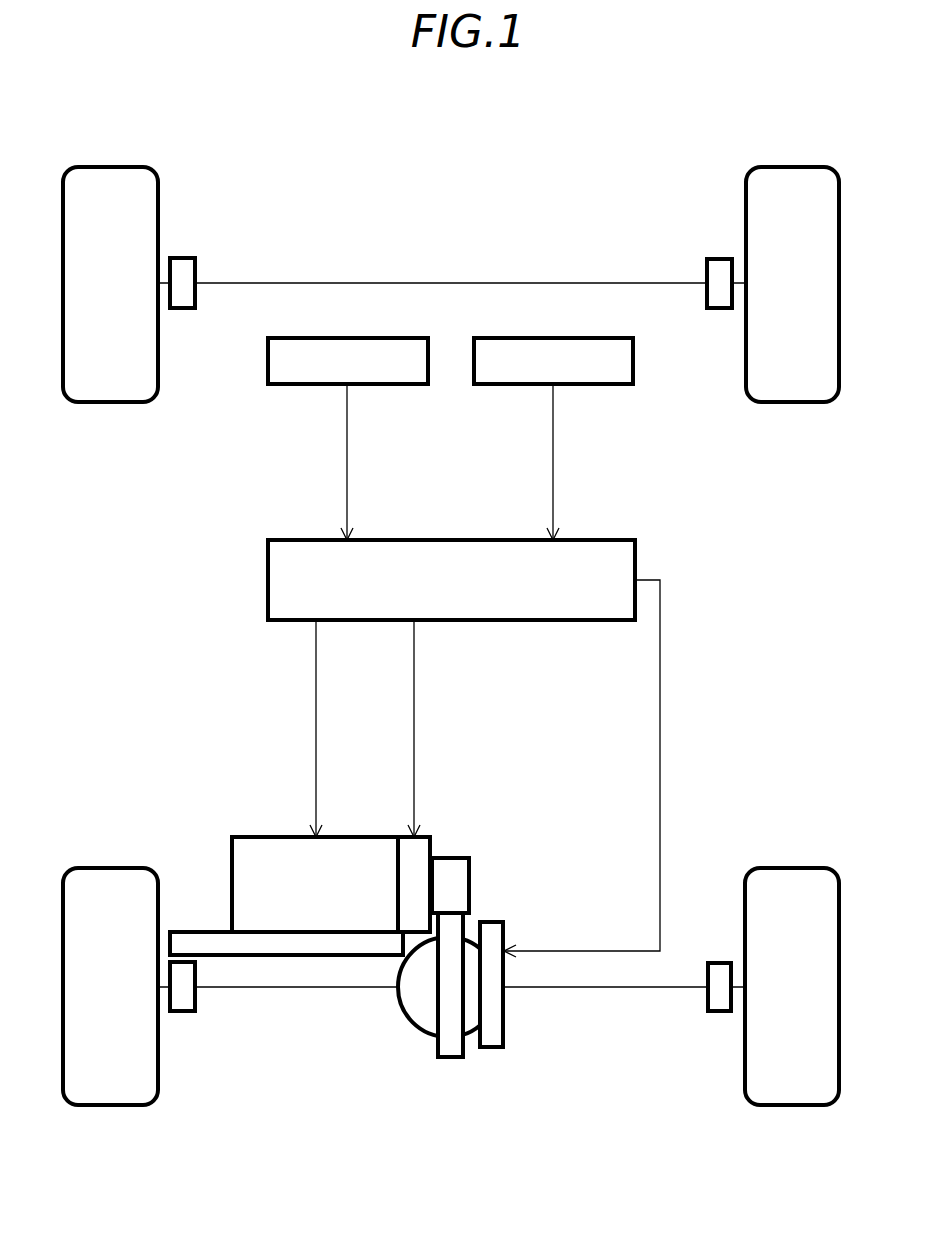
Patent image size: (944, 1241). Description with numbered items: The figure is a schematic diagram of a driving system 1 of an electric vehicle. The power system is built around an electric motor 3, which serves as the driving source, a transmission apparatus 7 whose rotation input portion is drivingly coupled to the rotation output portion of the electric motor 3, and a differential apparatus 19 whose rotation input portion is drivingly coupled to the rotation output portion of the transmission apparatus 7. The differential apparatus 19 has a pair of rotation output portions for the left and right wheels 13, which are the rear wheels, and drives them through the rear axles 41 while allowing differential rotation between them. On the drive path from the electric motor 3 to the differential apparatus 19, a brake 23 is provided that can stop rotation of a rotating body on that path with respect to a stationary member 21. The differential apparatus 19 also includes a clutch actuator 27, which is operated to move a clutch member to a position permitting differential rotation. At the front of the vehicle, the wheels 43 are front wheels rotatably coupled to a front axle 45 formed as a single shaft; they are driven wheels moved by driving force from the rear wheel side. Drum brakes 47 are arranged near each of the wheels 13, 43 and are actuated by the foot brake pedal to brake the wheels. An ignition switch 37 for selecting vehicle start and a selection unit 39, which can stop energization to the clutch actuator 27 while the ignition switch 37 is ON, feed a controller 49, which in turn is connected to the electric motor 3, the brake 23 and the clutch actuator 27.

The driving system 1 is at (517, 170).
The electric motor 3 is at (256, 837).
The transmission apparatus 7 is at (472, 870).
The wheels 13 is at (115, 868).
The differential apparatus 19 is at (433, 1056).
The stationary member 21 is at (195, 945).
The brake 23 is at (430, 838).
The clutch actuator 27 is at (490, 1048).
The ignition switch 37 is at (267, 360).
The selection unit 39 is at (634, 355).
The rear axles 41 is at (320, 989).
The wheels 43 is at (107, 165).
The front axle 45 is at (416, 282).
The drum brakes 47 is at (185, 258).
The controller 49 is at (425, 540).